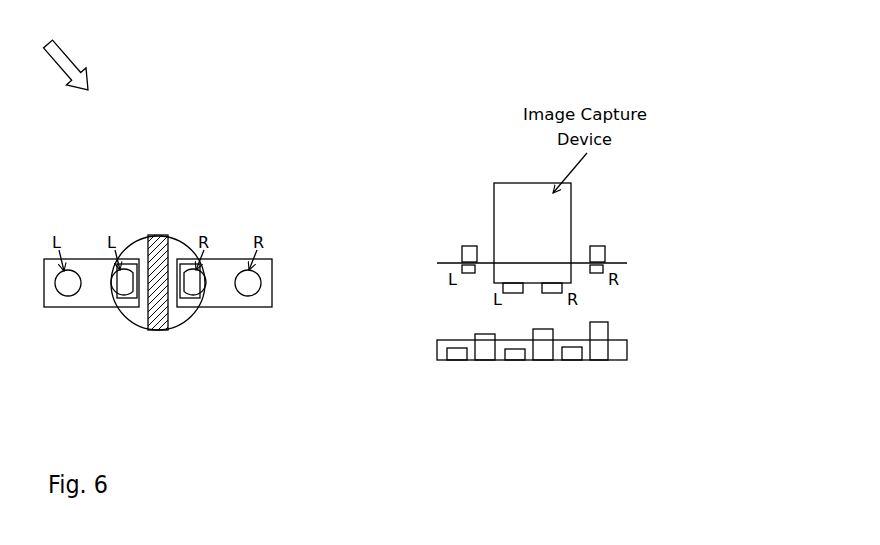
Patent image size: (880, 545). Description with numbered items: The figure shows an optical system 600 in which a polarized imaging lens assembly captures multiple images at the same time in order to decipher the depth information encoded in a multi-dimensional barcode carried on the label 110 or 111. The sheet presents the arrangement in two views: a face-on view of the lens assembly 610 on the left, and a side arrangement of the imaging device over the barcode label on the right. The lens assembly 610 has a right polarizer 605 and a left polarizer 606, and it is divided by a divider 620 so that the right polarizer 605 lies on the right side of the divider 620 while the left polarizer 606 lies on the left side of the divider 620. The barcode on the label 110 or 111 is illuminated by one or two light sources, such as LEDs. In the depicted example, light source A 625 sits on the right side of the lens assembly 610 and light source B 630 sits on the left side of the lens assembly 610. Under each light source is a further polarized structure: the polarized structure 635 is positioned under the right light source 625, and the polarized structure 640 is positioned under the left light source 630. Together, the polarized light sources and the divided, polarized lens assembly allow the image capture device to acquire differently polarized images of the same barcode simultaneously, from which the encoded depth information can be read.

The optical system 600 is at (91, 67).
The right polarizer 605 is at (196, 272).
The left polarizer 606 is at (118, 272).
The lens assembly 610 is at (158, 236).
The divider 620 is at (159, 331).
The light source A 625 is at (606, 253).
The light source B 630 is at (460, 253).
The polarized structure 635 is at (238, 272).
The polarized structure 640 is at (58, 273).
The label 110 is at (599, 373).
The label 111 is at (586, 361).